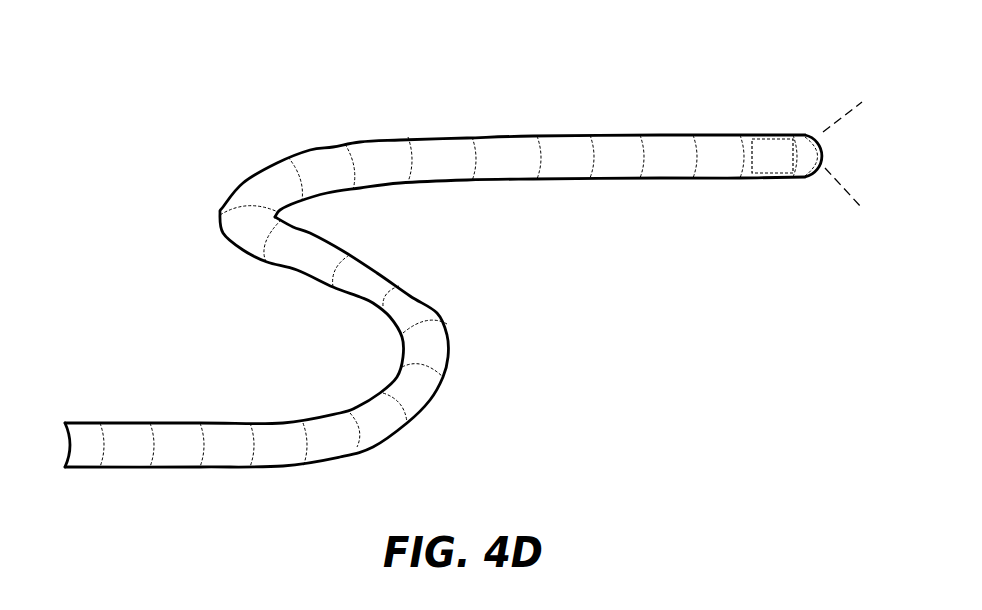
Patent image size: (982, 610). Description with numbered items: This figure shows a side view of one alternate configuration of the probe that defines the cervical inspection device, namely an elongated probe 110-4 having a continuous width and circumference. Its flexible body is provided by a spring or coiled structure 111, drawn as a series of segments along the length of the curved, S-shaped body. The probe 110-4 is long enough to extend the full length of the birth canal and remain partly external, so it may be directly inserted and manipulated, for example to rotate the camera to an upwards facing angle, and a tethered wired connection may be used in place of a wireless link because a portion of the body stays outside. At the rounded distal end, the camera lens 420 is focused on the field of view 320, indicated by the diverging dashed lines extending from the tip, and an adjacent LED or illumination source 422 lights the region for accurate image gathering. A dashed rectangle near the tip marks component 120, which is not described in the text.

The elongated probe 110-4 is at (450, 349).
The spring or coiled structure 111 is at (502, 152).
The sensor 120 is at (760, 158).
The camera lens 420 is at (818, 167).
The LED or illumination source 422 is at (818, 152).
The FOV 320 is at (837, 190).